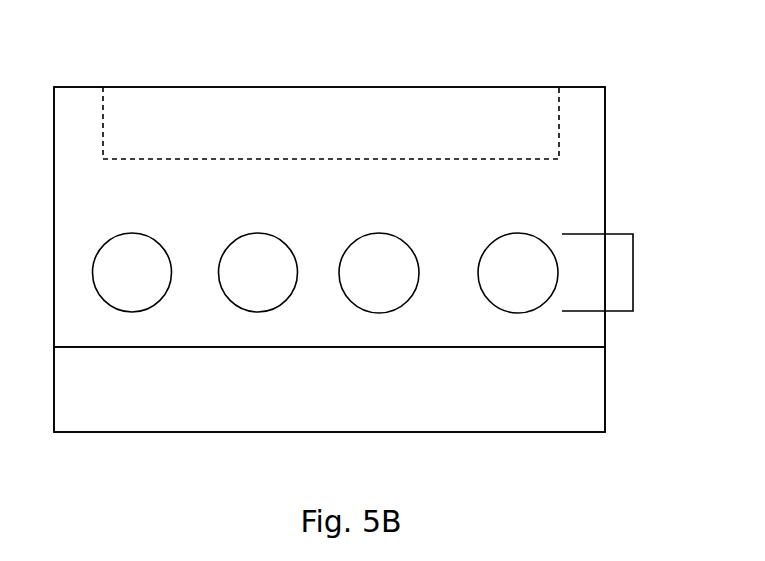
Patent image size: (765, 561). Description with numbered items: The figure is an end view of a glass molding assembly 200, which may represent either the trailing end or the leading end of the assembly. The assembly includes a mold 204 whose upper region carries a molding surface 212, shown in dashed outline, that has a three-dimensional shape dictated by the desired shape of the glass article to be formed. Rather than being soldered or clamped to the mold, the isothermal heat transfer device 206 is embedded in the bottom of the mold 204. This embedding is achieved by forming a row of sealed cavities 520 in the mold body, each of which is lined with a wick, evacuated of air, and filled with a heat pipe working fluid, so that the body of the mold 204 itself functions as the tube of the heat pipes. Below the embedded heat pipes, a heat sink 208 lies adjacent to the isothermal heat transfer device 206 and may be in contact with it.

The glass molding assembly 200 is at (588, 86).
The mold 204 is at (80, 100).
The isothermal heat transfer device 206 is at (633, 271).
The heat sink 208 is at (241, 419).
The molding surface 212 is at (331, 158).
The sealed cavities 520 is at (128, 247).